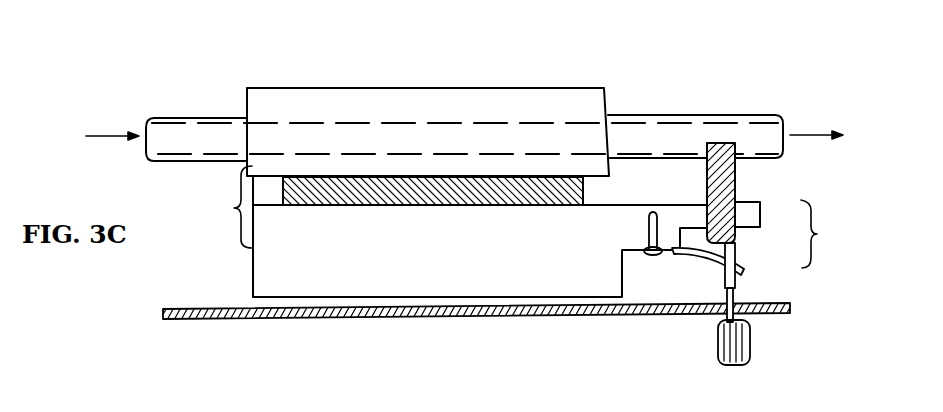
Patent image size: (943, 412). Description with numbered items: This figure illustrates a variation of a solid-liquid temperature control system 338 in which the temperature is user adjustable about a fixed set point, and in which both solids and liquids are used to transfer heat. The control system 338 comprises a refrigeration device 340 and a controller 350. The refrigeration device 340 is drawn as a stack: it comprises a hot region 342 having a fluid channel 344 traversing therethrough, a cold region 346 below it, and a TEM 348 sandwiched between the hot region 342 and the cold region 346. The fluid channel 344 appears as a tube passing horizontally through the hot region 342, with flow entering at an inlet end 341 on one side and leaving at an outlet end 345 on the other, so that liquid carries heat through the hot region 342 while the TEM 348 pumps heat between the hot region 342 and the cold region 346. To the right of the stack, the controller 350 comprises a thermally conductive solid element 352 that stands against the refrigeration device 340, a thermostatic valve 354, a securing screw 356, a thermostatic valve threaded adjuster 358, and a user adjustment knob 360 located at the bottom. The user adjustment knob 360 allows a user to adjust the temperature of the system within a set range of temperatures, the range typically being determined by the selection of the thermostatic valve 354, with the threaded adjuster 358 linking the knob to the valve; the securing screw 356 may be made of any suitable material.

The control system 338 is at (318, 60).
The refrigeration device 340 is at (220, 207).
The inlet end of tube 341 is at (142, 118).
The hot region 342 is at (470, 98).
The fluid channel 344 is at (541, 134).
The outlet end of tube 345 is at (791, 122).
The cold region 346 is at (347, 282).
The TEM 348 is at (524, 205).
The controller 350 is at (725, 231).
The thermally conductive solid element 352 is at (720, 143).
The thermostatic valve 354 is at (692, 258).
The securing screw 356 is at (648, 232).
The thermostatic valve threaded adjuster 358 is at (740, 277).
The user adjustment knob 360 is at (748, 356).